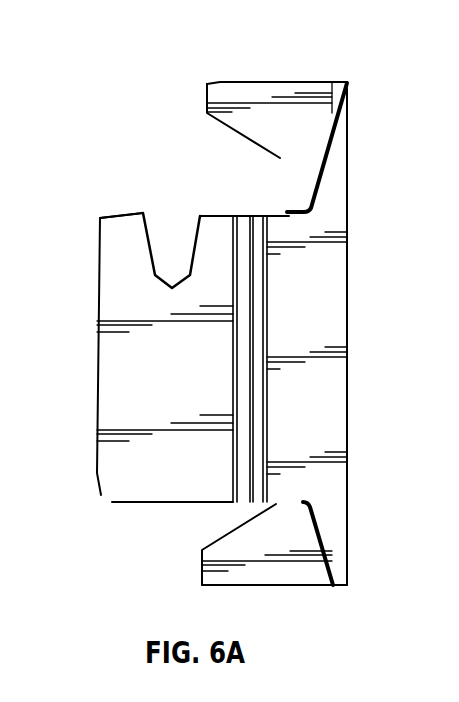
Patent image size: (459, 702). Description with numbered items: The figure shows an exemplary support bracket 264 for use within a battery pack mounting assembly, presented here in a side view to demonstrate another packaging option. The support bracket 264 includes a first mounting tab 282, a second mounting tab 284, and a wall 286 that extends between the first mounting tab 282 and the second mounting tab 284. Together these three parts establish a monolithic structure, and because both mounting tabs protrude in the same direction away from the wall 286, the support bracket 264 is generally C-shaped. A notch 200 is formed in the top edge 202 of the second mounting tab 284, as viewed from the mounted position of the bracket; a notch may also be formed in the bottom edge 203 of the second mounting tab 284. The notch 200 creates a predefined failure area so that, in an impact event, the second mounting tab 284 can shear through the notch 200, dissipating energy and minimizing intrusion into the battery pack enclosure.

The support bracket 264 is at (341, 51).
The first mounting tab 282 is at (270, 91).
The second mounting tab 284 is at (135, 395).
The wall 286 is at (327, 325).
The notch 200 is at (164, 250).
The top edge 202 is at (120, 213).
The bottom edge 203 is at (167, 502).